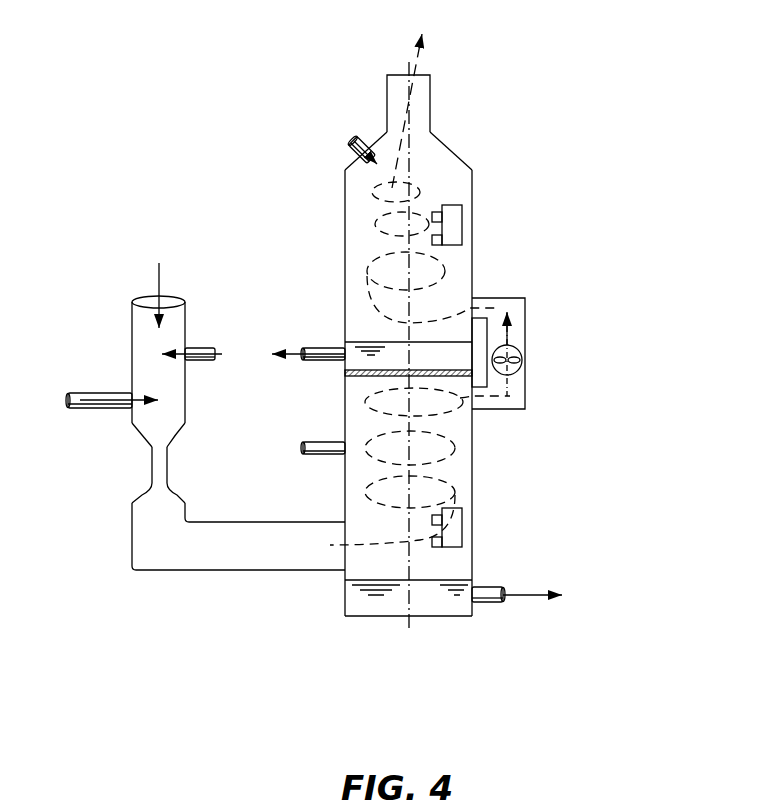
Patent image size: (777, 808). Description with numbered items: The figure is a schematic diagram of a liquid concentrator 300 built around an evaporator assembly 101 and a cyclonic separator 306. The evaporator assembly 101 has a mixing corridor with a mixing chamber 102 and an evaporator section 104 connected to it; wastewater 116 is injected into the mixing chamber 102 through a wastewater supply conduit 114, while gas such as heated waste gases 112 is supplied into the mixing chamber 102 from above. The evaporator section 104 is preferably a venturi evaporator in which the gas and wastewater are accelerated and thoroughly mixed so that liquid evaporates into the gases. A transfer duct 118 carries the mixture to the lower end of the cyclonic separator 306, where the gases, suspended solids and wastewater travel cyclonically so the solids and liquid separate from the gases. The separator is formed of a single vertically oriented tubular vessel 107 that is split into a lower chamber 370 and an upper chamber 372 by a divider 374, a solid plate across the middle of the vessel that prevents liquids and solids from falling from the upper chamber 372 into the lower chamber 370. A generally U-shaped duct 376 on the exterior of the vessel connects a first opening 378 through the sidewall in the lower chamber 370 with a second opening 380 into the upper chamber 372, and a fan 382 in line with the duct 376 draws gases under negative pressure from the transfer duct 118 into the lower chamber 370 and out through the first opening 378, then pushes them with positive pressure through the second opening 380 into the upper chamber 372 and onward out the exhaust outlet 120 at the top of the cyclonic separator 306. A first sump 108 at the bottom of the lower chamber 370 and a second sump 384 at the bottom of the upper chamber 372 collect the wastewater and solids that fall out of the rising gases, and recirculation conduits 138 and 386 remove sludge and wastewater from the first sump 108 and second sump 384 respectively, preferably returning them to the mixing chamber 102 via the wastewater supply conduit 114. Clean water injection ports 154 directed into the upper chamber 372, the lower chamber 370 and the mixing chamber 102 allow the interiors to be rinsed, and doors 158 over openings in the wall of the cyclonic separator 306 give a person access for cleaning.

The liquid concentrator 300 is at (536, 50).
The exhaust outlet 120 is at (430, 83).
The clean water injection port 154 is at (377, 147).
The door 158 is at (450, 216).
The upper chamber 372 is at (455, 162).
The cyclonic separator 306 is at (475, 186).
The second opening 380 is at (473, 300).
The duct 376 is at (525, 305).
The fan 382 is at (525, 380).
The first opening 378 is at (473, 403).
The divider 374 is at (447, 377).
The lower chamber 370 is at (462, 489).
The second sump 384 is at (375, 352).
The recirculation conduit 386 is at (312, 347).
The tubular vessel 107 is at (473, 565).
The first sump 108 is at (447, 605).
The recirculation conduit 138 is at (485, 603).
The heated waste gases 112 is at (157, 283).
The mixing chamber 102 is at (178, 383).
The evaporator assembly 101 is at (134, 434).
The evaporator section 104 is at (150, 460).
The transfer duct 118 is at (245, 562).
The wastewater 116 is at (87, 398).
The wastewater supply conduit 114 is at (67, 395).